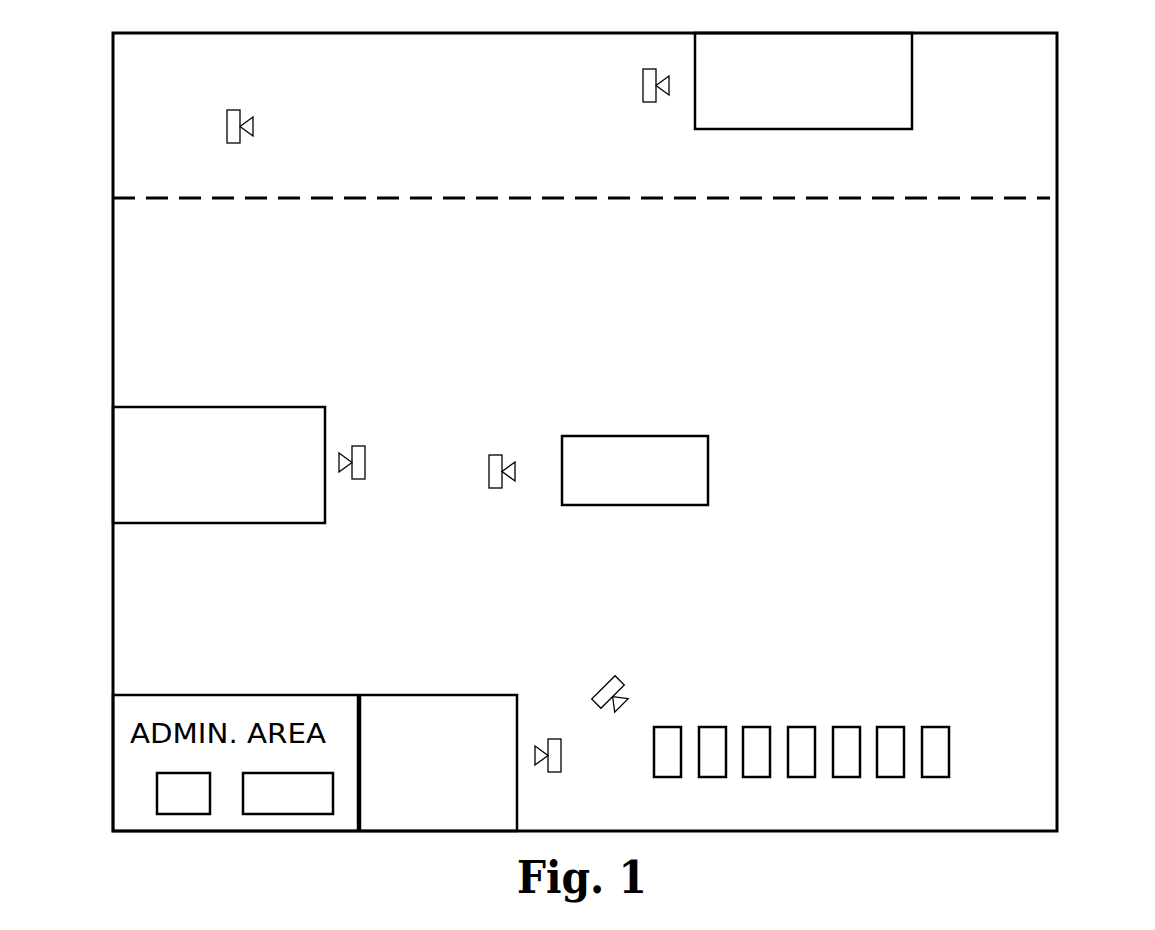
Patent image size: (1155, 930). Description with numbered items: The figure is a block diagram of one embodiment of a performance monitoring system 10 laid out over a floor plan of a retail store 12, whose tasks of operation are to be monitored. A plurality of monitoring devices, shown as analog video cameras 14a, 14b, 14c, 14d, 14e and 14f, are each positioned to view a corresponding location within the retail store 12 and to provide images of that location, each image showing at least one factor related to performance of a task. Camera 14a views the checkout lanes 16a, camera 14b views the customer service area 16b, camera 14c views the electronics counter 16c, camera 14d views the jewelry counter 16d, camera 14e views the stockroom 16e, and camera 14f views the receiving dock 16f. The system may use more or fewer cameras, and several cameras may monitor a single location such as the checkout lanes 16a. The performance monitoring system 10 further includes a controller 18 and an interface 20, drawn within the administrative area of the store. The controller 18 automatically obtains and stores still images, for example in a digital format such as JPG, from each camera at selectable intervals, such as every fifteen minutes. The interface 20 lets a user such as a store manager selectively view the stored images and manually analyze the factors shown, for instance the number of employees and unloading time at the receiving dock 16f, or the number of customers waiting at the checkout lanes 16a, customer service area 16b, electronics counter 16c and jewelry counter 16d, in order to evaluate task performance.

The performance monitoring system 10 is at (956, 111).
The retail store 12 is at (1057, 128).
The analog video camera 14a is at (620, 677).
The analog video camera 14b is at (554, 739).
The analog video camera 14c is at (359, 446).
The analog video camera 14d is at (495, 455).
The analog video camera 14e is at (232, 110).
The analog video camera 14f is at (643, 85).
The checkout lanes 16a is at (676, 797).
The customer service area 16b is at (436, 695).
The electronics counter 16c is at (271, 407).
The jewelry counter 16d is at (633, 436).
The stockroom 16e is at (386, 133).
The receiving dock 16f is at (752, 129).
The controller 18 is at (296, 814).
The interface 20 is at (183, 814).